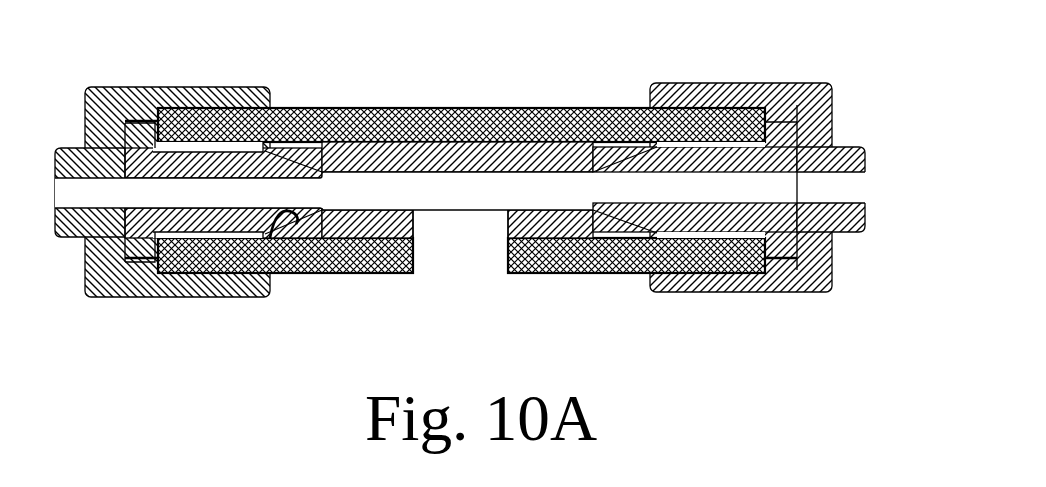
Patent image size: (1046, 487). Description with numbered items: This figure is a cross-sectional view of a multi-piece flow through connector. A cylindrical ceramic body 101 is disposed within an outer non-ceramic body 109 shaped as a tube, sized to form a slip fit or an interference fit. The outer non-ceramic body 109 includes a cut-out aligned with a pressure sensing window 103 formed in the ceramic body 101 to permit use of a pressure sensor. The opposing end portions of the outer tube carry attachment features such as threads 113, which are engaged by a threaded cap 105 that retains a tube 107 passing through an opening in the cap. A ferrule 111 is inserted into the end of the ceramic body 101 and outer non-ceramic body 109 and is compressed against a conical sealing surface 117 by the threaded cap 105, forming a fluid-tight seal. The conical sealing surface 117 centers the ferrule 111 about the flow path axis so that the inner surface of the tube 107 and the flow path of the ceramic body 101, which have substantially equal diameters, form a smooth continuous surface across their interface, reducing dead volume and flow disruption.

The ceramic body 101 is at (362, 163).
The pressure sensing window 103 is at (455, 215).
The threaded cap 105 is at (802, 288).
The tube 107 is at (838, 157).
The outer non-ceramic body 109 is at (505, 142).
The ferrule 111 is at (715, 157).
The threads 113 is at (215, 123).
The conical sealing surface 117 is at (270, 238).